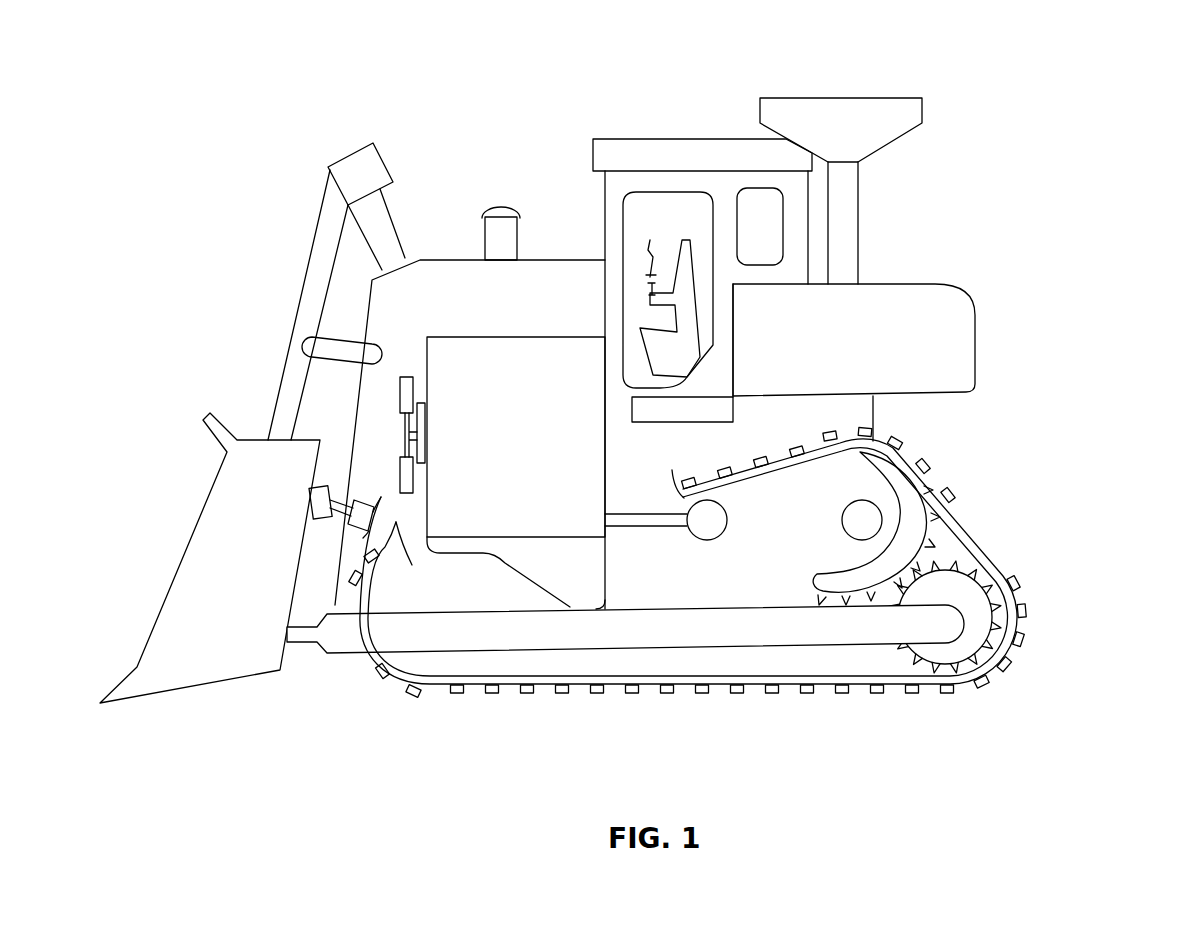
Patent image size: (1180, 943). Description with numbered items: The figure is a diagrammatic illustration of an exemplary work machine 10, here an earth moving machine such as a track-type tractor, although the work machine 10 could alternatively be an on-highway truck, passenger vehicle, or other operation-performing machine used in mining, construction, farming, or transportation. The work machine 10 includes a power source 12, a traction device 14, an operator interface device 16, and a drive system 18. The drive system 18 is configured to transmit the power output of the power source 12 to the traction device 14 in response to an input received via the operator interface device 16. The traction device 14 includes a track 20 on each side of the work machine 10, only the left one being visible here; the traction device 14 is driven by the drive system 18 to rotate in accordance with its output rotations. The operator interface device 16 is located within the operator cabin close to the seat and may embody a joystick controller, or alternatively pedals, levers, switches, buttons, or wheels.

The work machine 10 is at (955, 83).
The power source 12 is at (522, 440).
The traction device 14 is at (1047, 560).
The operator interface device 16 is at (653, 257).
The drive system 18 is at (682, 585).
The track 20 is at (978, 521).